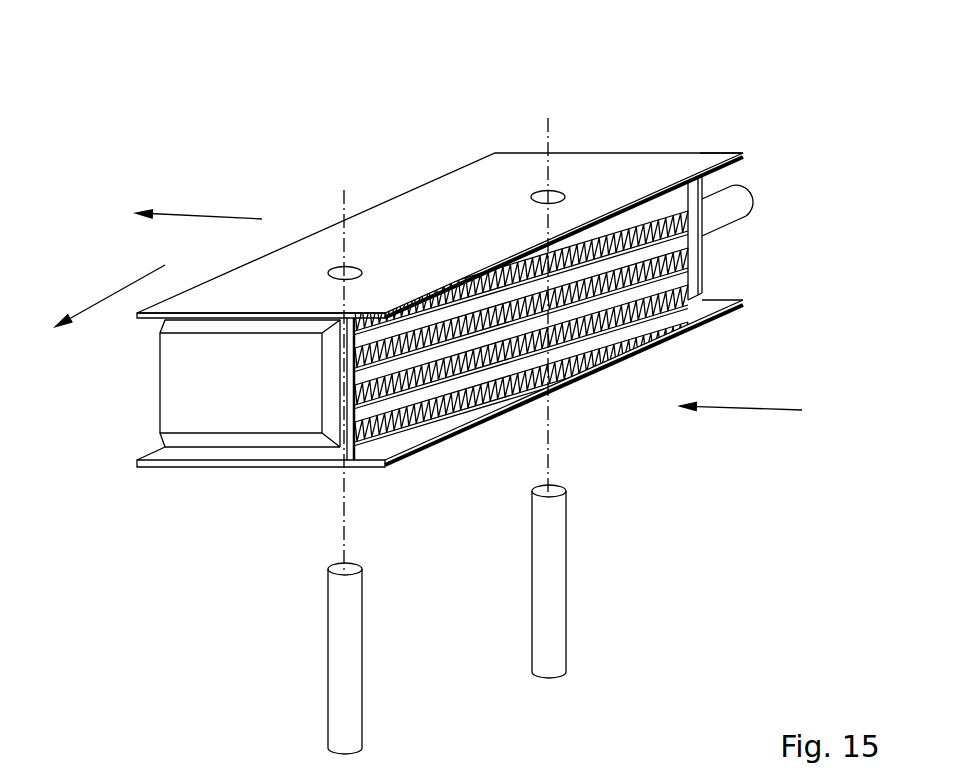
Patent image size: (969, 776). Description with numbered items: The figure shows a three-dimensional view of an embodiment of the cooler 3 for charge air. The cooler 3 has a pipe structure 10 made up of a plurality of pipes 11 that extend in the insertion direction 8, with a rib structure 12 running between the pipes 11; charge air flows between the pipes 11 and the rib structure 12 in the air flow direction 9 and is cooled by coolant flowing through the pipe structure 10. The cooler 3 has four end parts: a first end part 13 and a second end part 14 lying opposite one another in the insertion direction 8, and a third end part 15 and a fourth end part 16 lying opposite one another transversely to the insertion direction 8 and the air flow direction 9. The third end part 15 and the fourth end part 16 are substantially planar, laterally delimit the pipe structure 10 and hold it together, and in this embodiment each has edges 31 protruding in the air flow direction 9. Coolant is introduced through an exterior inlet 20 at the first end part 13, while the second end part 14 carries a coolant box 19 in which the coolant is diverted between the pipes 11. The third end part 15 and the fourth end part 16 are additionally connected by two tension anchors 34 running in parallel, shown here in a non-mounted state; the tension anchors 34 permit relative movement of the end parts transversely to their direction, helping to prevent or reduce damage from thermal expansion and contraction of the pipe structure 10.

The cooler 3 is at (481, 384).
The insertion direction 8 is at (118, 291).
The air flow direction 9 is at (202, 216).
The pipe structure 10 is at (526, 330).
The pipes 11 is at (383, 370).
The rib structure 12 is at (623, 233).
The first end part 13 is at (723, 263).
The second end part 14 is at (200, 456).
The third end part 15 is at (415, 168).
The fourth end part 16 is at (422, 466).
The coolant box 19 is at (255, 418).
The exterior inlet 20 is at (745, 200).
The edges 31 is at (742, 154).
The tension anchors 34 is at (355, 667).